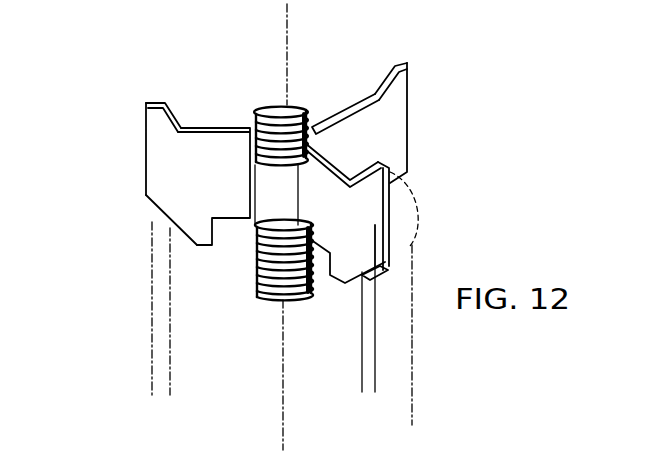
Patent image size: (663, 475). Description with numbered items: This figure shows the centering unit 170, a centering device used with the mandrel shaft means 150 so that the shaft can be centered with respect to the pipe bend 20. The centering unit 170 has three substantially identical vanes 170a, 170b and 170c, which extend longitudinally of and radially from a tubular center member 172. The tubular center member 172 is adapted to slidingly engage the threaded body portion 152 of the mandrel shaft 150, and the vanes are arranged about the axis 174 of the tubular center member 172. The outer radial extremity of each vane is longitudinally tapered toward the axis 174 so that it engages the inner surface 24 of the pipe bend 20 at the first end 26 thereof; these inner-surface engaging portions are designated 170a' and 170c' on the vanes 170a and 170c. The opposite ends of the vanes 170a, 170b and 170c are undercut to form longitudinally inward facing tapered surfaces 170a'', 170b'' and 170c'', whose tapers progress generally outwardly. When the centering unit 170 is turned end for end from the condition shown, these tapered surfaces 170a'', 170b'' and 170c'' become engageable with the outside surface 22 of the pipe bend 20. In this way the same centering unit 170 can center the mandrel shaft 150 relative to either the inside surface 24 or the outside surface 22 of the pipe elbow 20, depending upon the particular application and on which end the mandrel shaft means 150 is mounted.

The mandrel shaft means 150 is at (277, 76).
The threaded body portion 152 is at (258, 253).
The tubular center member 172 is at (270, 193).
The axis 174 is at (282, 354).
The centering unit 170 is at (437, 108).
The centering vane 170a is at (395, 236).
The inner surface engaging portion 170a' is at (434, 221).
The longitudinally inward facing tapered surface 170a'' is at (401, 162).
The centering vane 170b is at (379, 69).
The longitudinally inward facing tapered surface 170b'' is at (366, 69).
The centering vane 170c is at (168, 249).
The inner surface engaging portion 170c' is at (140, 244).
The longitudinally inward facing tapered surface 170c'' is at (183, 95).
The inside surface 24 is at (362, 293).
The first end portion 26 is at (397, 232).
The pipe elbow 20 is at (412, 335).
The outside surface 22 is at (412, 375).